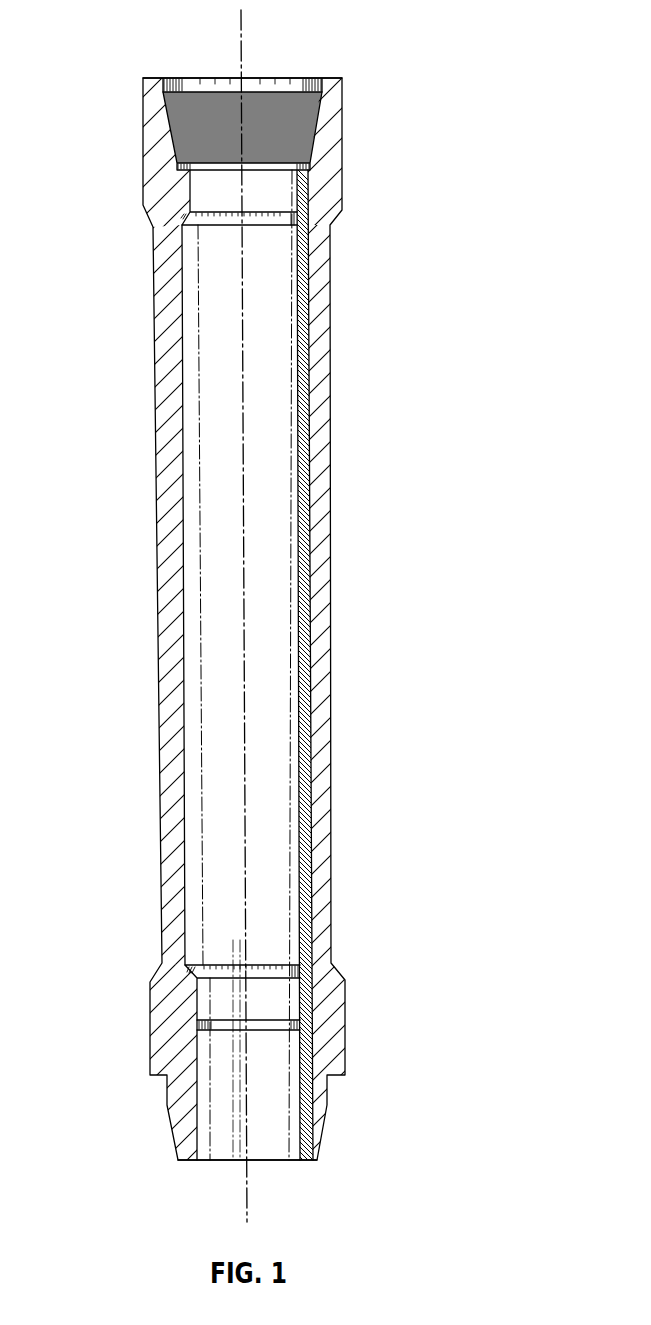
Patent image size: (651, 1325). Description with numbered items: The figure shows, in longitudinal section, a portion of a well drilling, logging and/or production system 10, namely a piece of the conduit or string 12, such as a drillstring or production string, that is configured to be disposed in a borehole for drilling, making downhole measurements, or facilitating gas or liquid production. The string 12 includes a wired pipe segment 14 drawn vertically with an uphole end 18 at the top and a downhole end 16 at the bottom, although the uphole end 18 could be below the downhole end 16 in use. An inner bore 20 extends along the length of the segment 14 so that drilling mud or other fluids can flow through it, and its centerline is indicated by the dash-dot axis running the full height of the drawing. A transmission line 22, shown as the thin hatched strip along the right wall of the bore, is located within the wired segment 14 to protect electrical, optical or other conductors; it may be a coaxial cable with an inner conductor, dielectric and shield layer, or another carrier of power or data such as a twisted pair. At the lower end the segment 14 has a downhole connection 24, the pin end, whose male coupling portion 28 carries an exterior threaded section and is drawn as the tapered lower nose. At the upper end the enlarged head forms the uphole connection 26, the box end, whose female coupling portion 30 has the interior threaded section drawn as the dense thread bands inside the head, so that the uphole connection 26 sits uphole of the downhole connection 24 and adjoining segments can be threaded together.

The well drilling, logging and/or production system 10 is at (112, 32).
The conduit or string 12 is at (426, 591).
The wired pipe segment 14 is at (172, 812).
The downhole end 16 is at (223, 1162).
The uphole end 18 is at (288, 80).
The inner bore 20 is at (245, 450).
The transmission line 22 is at (300, 255).
The downhole connection 24 is at (180, 1105).
The uphole connection 26 is at (162, 146).
The male coupling portion 28 is at (330, 1110).
The female coupling portion 30 is at (317, 132).